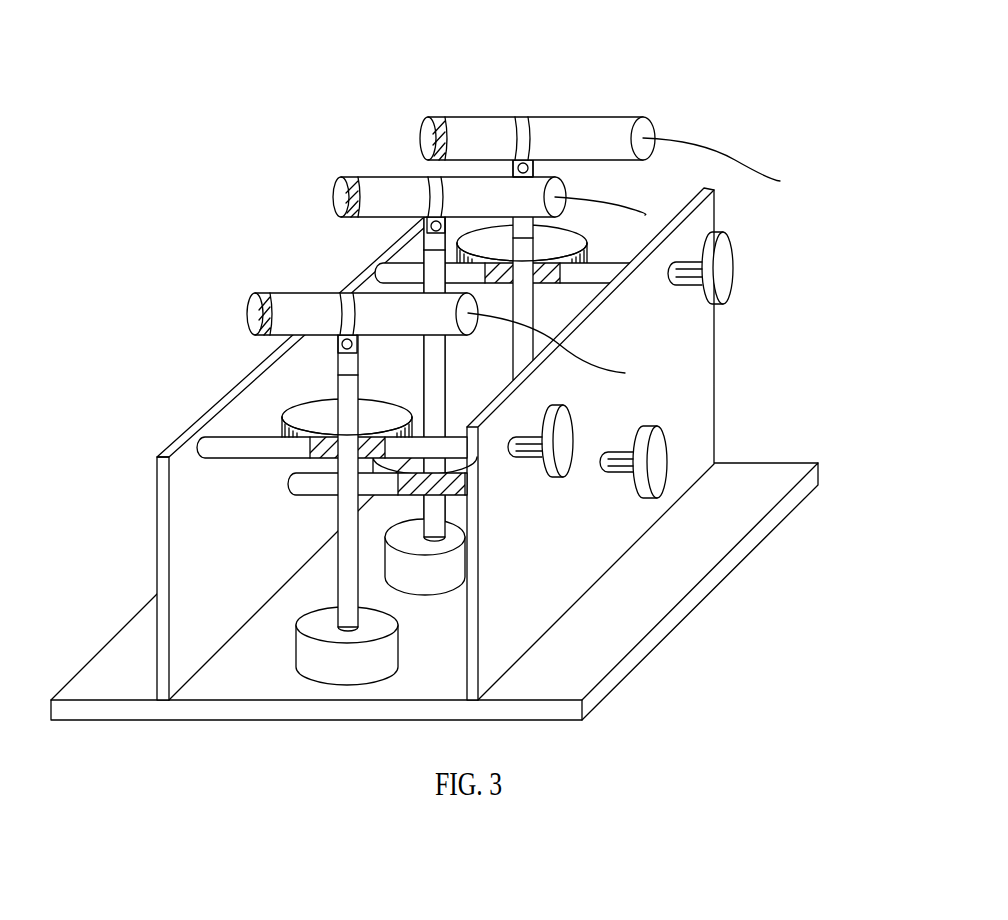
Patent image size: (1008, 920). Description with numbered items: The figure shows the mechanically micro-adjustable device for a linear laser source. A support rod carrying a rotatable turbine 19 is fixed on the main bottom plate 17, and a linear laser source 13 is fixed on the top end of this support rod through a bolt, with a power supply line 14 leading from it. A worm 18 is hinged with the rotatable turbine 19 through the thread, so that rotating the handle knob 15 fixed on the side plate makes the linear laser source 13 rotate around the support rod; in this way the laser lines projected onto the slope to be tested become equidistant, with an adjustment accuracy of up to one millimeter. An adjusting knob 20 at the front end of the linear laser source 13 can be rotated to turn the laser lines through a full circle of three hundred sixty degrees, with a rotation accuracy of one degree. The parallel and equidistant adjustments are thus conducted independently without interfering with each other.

The linear laser source 13 is at (592, 117).
The power supply line 14 is at (717, 147).
The handle knob 15 is at (738, 259).
The main bottom plate 17 is at (735, 487).
The worm 18 is at (238, 437).
The rotatable turbine 19 is at (290, 402).
The adjusting knob 20 is at (335, 172).